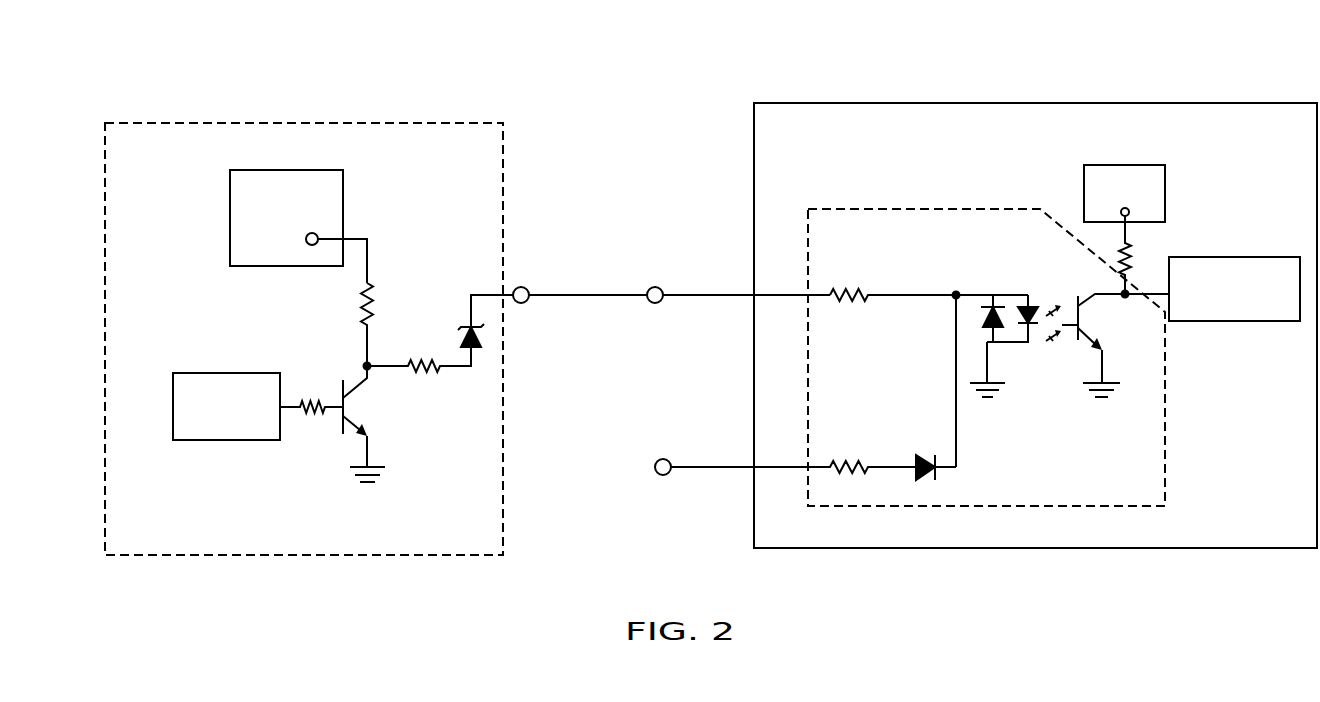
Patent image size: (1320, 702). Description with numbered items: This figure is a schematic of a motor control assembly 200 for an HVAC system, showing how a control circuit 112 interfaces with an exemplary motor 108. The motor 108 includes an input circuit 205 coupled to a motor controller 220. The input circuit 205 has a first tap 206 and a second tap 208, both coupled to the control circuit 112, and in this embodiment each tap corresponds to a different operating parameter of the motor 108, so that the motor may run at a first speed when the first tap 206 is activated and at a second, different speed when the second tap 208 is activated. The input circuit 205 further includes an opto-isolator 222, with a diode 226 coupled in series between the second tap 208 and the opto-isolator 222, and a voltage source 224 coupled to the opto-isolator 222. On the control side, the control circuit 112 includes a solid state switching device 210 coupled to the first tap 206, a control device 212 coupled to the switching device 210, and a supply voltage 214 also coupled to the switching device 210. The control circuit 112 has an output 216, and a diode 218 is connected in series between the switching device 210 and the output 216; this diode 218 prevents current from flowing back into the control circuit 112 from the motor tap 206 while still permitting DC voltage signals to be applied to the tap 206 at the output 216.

The motor 108 is at (789, 90).
The control circuit 112 is at (152, 112).
The motor control assembly 200 is at (516, 72).
The input circuit 205 is at (1180, 415).
The first tap 206 is at (653, 287).
The second tap 208 is at (655, 465).
The solid state switching device 210 is at (326, 432).
The control device 212 is at (219, 373).
The supply voltage 214 is at (230, 213).
The output 216 is at (523, 287).
The diode 218 is at (462, 335).
The motor controller 220 is at (1208, 257).
The opto-isolator 222 is at (1003, 275).
The voltage source 224 is at (1124, 165).
The diode 226 is at (926, 452).